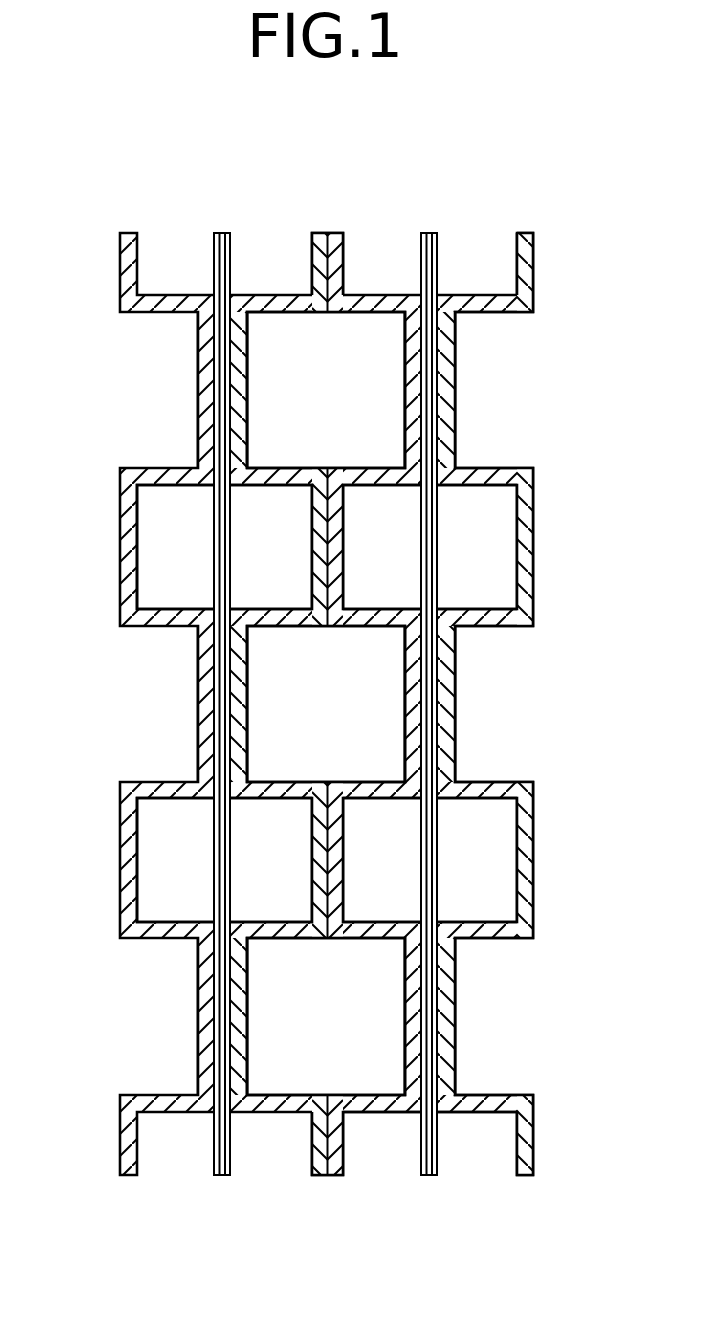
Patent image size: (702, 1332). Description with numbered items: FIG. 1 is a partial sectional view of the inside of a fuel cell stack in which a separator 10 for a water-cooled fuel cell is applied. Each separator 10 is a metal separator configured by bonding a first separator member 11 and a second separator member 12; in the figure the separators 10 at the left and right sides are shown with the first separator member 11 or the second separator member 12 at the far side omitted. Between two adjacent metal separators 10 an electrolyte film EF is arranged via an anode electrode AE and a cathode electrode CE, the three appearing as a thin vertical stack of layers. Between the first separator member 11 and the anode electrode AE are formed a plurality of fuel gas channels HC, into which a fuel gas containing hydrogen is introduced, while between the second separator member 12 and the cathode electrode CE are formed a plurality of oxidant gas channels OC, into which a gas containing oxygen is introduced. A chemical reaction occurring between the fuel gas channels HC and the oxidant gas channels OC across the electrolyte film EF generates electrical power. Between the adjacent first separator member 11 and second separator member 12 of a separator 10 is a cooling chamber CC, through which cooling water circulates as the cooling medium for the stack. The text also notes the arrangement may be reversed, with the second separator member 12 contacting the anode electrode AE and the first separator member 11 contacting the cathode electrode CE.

The separator 10 is at (330, 233).
The first separator member 11 is at (247, 392).
The second separator member 12 is at (198, 390).
The electrolyte film EF is at (224, 232).
The fuel gas channel HC is at (288, 600).
The cooling chamber CC is at (363, 718).
The oxidant gas channel OC is at (385, 877).
The cathode electrode CE is at (215, 1175).
The anode electrode AE is at (229, 1175).